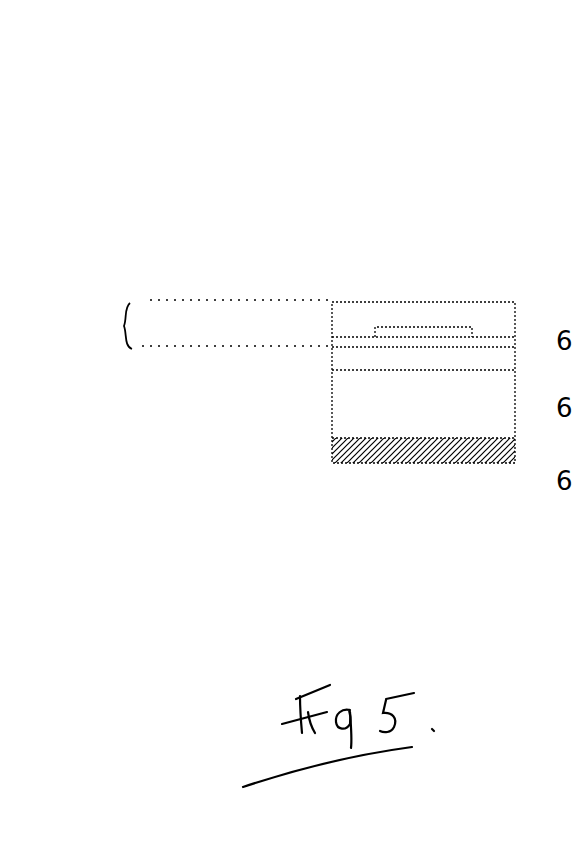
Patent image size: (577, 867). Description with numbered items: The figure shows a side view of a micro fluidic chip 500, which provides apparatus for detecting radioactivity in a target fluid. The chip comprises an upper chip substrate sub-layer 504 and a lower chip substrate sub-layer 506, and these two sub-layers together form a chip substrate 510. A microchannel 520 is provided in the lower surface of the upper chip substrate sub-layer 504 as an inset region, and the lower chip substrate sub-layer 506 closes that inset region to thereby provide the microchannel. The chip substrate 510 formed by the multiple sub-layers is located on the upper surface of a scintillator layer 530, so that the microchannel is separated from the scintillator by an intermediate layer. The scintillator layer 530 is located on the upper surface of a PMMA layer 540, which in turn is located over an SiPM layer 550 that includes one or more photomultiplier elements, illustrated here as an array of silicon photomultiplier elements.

The micro fluidic chip 500 is at (453, 182).
The upper chip substrate sub-layer 504 is at (330, 316).
The lower chip substrate sub-layer 506 is at (330, 334).
The chip substrate 510 is at (178, 324).
The microchannel 520 is at (392, 328).
The scintillator layer 530 is at (330, 358).
The PMMA layer 540 is at (331, 415).
The SiPM layer 550 is at (330, 450).